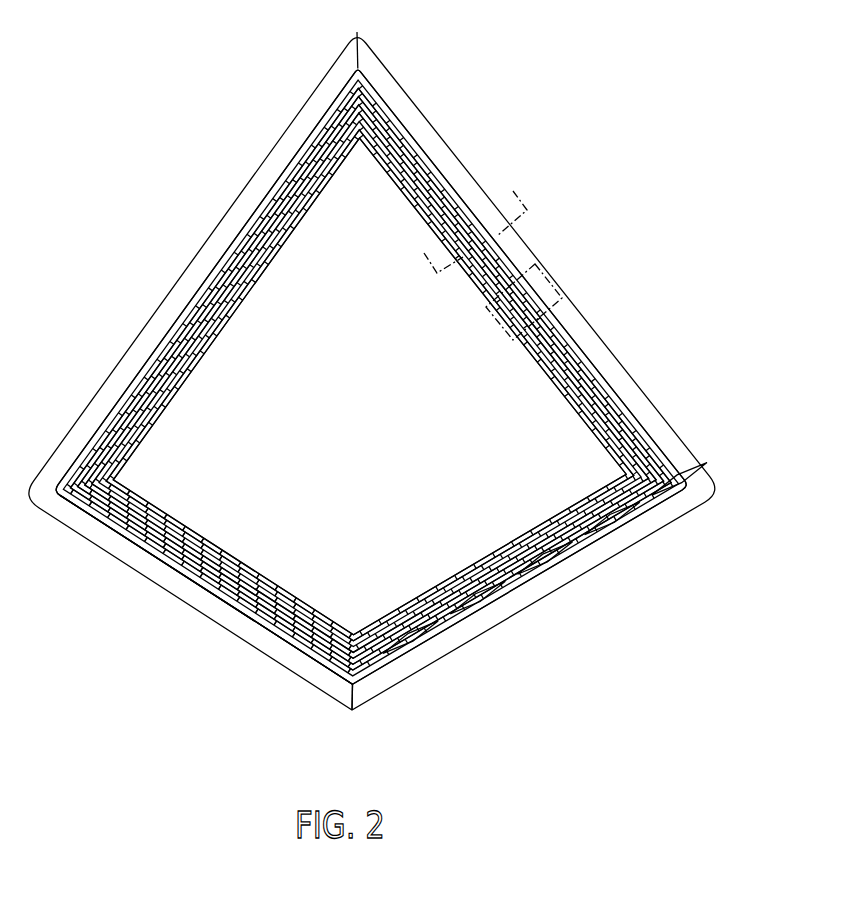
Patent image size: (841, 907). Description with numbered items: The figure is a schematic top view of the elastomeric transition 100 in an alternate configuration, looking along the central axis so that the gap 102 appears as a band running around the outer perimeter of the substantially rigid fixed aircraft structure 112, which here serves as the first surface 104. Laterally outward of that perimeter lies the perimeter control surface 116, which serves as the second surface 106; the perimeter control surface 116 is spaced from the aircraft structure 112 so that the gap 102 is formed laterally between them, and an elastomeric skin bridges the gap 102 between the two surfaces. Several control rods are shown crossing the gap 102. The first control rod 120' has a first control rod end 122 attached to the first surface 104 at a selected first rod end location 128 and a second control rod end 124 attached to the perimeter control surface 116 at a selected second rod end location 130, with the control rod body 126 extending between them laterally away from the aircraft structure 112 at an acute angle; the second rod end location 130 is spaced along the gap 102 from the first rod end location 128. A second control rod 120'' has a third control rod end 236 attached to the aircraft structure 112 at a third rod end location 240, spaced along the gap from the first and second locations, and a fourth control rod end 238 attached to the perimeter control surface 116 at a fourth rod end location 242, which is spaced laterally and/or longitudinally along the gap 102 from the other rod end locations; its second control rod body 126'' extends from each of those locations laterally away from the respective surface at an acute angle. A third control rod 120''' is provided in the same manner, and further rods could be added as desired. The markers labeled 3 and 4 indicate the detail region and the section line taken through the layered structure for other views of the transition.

The elastomeric transition 100 is at (470, 138).
The gap 102 is at (497, 577).
The first surface 104 is at (453, 422).
The aircraft structure 112 is at (453, 422).
The second surface 106 is at (452, 657).
The perimeter control surface 116 is at (452, 657).
The first control rod 120' is at (366, 375).
The second control rod 120'' is at (379, 410).
The third control rod 120''' is at (382, 370).
The first control rod end 122 is at (252, 558).
The first rod end location 128 is at (252, 558).
The second control rod end 124 is at (203, 600).
The second rod end location 130 is at (203, 600).
The control rod body 126 is at (370, 378).
The second control rod body 126'' is at (380, 379).
The third control rod end 236 is at (359, 622).
The third rod end location 240 is at (359, 622).
The fourth control rod end 238 is at (352, 700).
The fourth rod end location 242 is at (352, 700).
The detail view indicator FIG. 3 is at (563, 277).
The section line 4- 4 is at (471, 217).